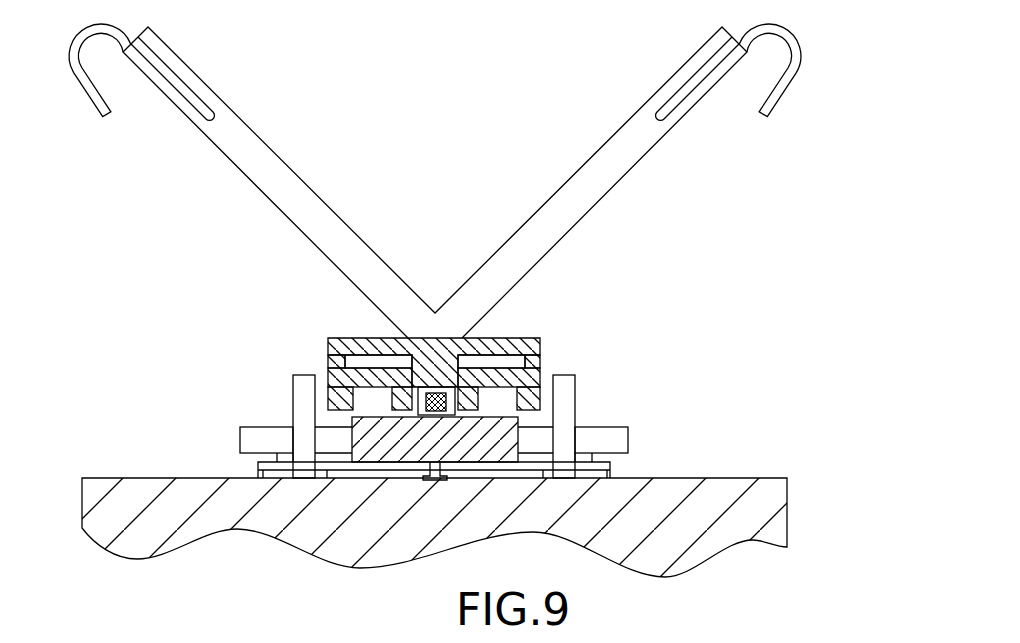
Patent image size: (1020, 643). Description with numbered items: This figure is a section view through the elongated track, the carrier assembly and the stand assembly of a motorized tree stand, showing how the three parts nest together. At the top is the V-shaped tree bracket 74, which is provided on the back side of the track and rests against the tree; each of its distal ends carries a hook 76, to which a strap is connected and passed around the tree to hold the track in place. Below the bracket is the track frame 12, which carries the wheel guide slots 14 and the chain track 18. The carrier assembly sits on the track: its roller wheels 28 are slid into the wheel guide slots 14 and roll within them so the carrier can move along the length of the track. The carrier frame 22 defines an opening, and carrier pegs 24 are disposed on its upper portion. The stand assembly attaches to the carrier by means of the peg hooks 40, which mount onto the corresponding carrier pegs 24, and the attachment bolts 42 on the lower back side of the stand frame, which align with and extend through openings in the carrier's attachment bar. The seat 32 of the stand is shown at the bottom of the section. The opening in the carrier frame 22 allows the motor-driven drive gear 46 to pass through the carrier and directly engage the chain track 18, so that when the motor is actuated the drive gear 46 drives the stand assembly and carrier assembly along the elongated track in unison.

The track frame 12 is at (541, 372).
The wheel guide slots 14 is at (370, 338).
The chain track 18 is at (434, 410).
The carrier frame 22 is at (512, 442).
The carrier pegs 24 is at (248, 440).
The roller wheels 28 is at (330, 354).
The seat 32 is at (728, 488).
The peg hooks 40 is at (302, 402).
The attachment bolts 42 is at (258, 466).
The drive gear 46 is at (437, 481).
The tree brackets 74 is at (317, 210).
The hooks 76 is at (92, 93).